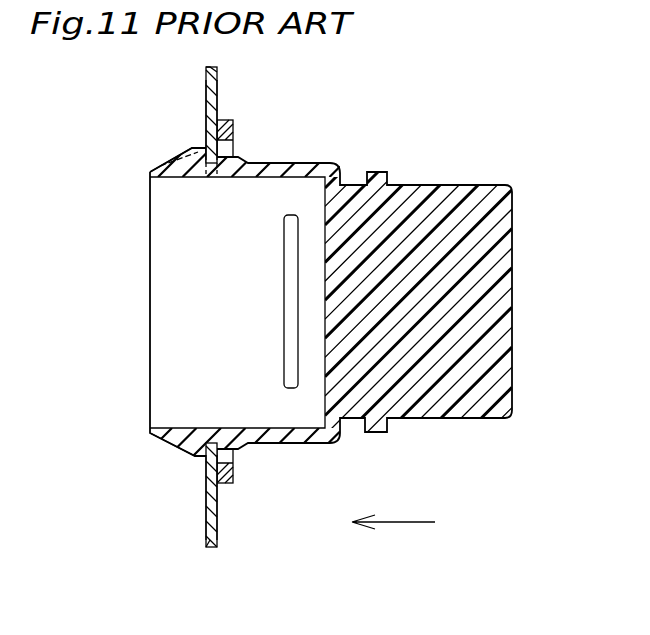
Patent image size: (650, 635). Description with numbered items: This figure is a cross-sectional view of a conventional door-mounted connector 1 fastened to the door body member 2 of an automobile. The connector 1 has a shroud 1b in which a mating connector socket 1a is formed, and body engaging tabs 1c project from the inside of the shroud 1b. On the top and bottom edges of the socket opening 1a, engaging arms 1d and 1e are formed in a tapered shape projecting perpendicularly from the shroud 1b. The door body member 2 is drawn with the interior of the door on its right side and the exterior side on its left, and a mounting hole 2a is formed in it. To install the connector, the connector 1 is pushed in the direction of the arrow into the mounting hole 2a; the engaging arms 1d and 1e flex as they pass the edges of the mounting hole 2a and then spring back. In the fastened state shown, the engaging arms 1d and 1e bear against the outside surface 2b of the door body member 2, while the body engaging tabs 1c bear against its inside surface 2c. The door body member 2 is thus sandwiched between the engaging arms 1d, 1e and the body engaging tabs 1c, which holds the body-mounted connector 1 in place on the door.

The door-mounted connector 1 is at (512, 250).
The mating connector socket 1a is at (157, 395).
The shroud 1b is at (283, 166).
The body engaging tabs 1c is at (233, 126).
The engaging arm 1d is at (178, 162).
The engaging arm 1e is at (186, 448).
The door body member 2 is at (213, 68).
The mounting hole 2a is at (208, 178).
The outside surface 2b is at (205, 103).
The inside surface 2c is at (217, 95).